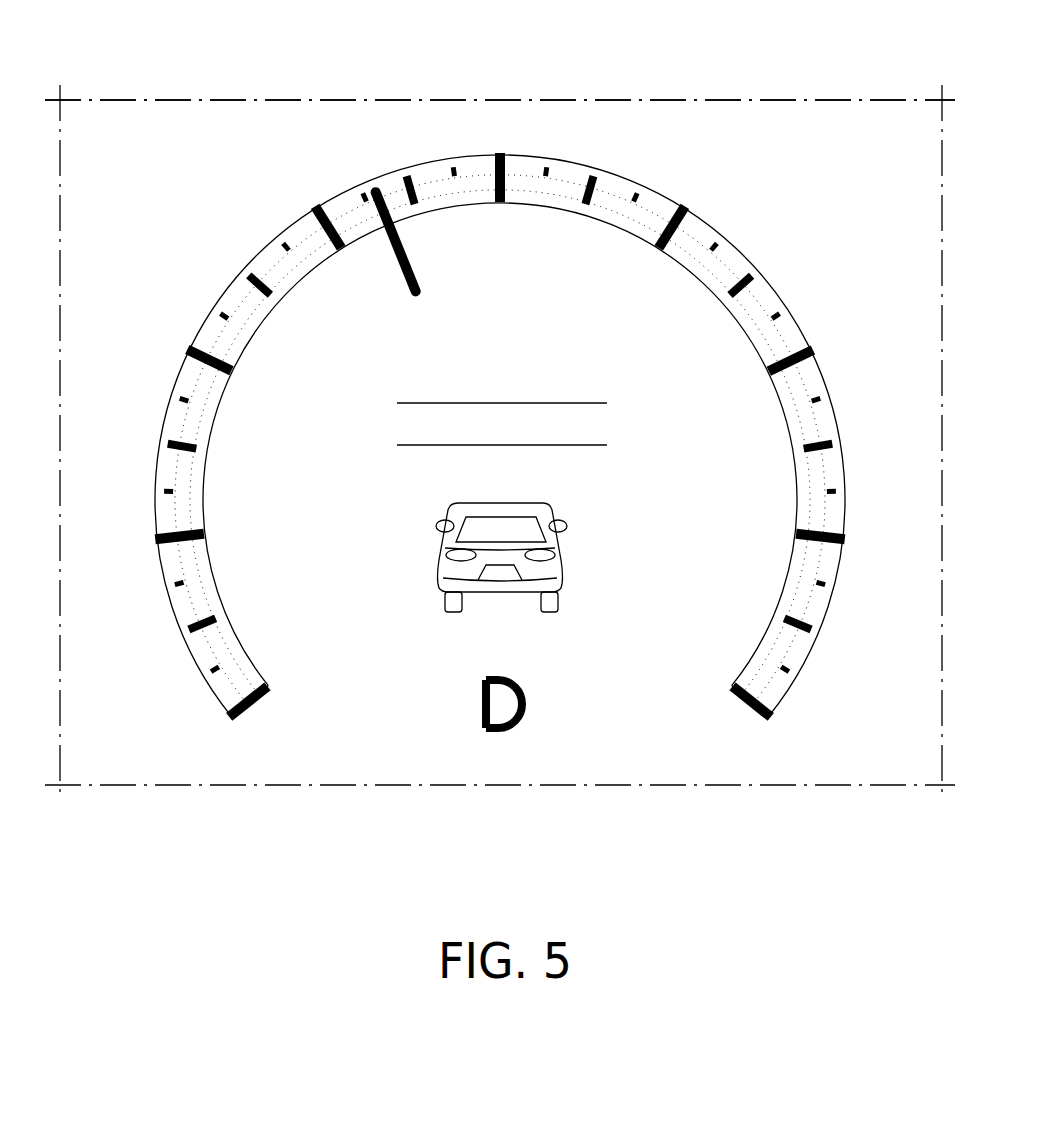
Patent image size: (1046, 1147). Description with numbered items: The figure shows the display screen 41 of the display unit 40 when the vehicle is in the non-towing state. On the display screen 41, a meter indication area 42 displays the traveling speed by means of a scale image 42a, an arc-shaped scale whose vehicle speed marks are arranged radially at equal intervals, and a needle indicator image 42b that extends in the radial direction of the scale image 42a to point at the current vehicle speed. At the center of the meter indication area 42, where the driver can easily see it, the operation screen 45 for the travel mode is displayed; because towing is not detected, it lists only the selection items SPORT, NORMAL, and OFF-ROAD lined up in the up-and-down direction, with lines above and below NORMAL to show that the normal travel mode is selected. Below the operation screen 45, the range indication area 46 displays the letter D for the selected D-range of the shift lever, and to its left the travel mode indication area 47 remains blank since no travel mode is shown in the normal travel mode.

The display unit 40 is at (748, 100).
The display screen 41 is at (676, 113).
The meter indication area 42 is at (518, 435).
The scale image 42a is at (782, 317).
The needle indicator image 42b is at (412, 297).
The operation screen 45 is at (395, 433).
The range indication area 46 is at (500, 748).
The travel mode indication area 47 is at (325, 745).